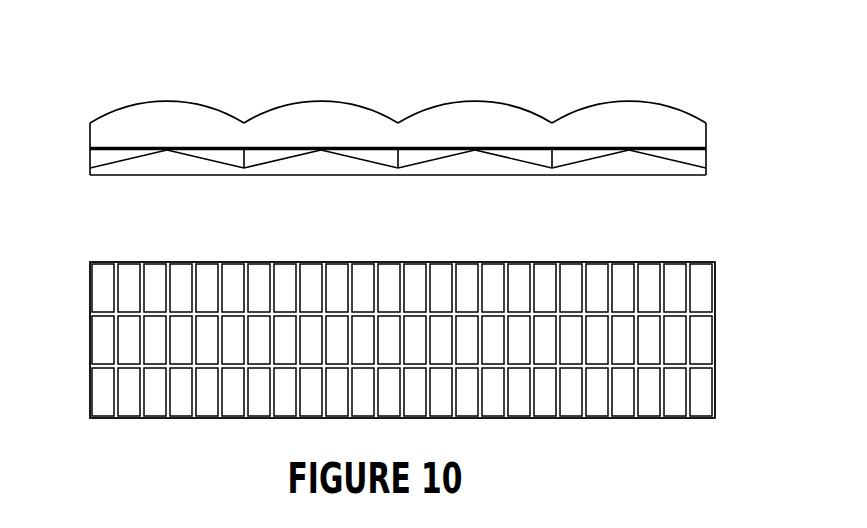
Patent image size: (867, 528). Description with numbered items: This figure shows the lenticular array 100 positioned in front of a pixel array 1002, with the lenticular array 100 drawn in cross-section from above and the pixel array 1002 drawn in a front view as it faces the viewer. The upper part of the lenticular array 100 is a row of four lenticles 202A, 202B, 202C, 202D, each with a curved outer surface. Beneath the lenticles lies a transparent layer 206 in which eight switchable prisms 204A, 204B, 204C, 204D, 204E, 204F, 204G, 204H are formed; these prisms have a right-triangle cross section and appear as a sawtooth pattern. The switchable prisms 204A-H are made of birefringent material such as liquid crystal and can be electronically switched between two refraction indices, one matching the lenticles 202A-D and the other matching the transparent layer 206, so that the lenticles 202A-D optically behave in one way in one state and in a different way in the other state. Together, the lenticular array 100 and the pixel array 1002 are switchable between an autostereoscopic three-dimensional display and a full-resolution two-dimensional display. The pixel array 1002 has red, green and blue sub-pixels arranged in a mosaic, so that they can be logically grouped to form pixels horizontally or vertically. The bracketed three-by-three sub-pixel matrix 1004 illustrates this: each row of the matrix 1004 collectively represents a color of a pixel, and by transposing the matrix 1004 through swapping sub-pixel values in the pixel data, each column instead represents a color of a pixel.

The lenticular array 100 is at (445, 53).
The lenticle 202A is at (162, 101).
The lenticle 202B is at (320, 101).
The lenticle 202C is at (473, 102).
The lenticle 202D is at (627, 102).
The switchable prism 204A is at (115, 168).
The switchable prism 204B is at (208, 160).
The switchable prism 204C is at (275, 160).
The switchable prism 204D is at (367, 160).
The switchable prism 204E is at (420, 160).
The switchable prism 204F is at (515, 160).
The switchable prism 204G is at (582, 160).
The switchable prism 204H is at (678, 160).
The transparent layer 206 is at (398, 176).
The pixel array 1002 is at (718, 340).
The 3-by-3 sub-pixel matrix 1004 is at (90, 421).